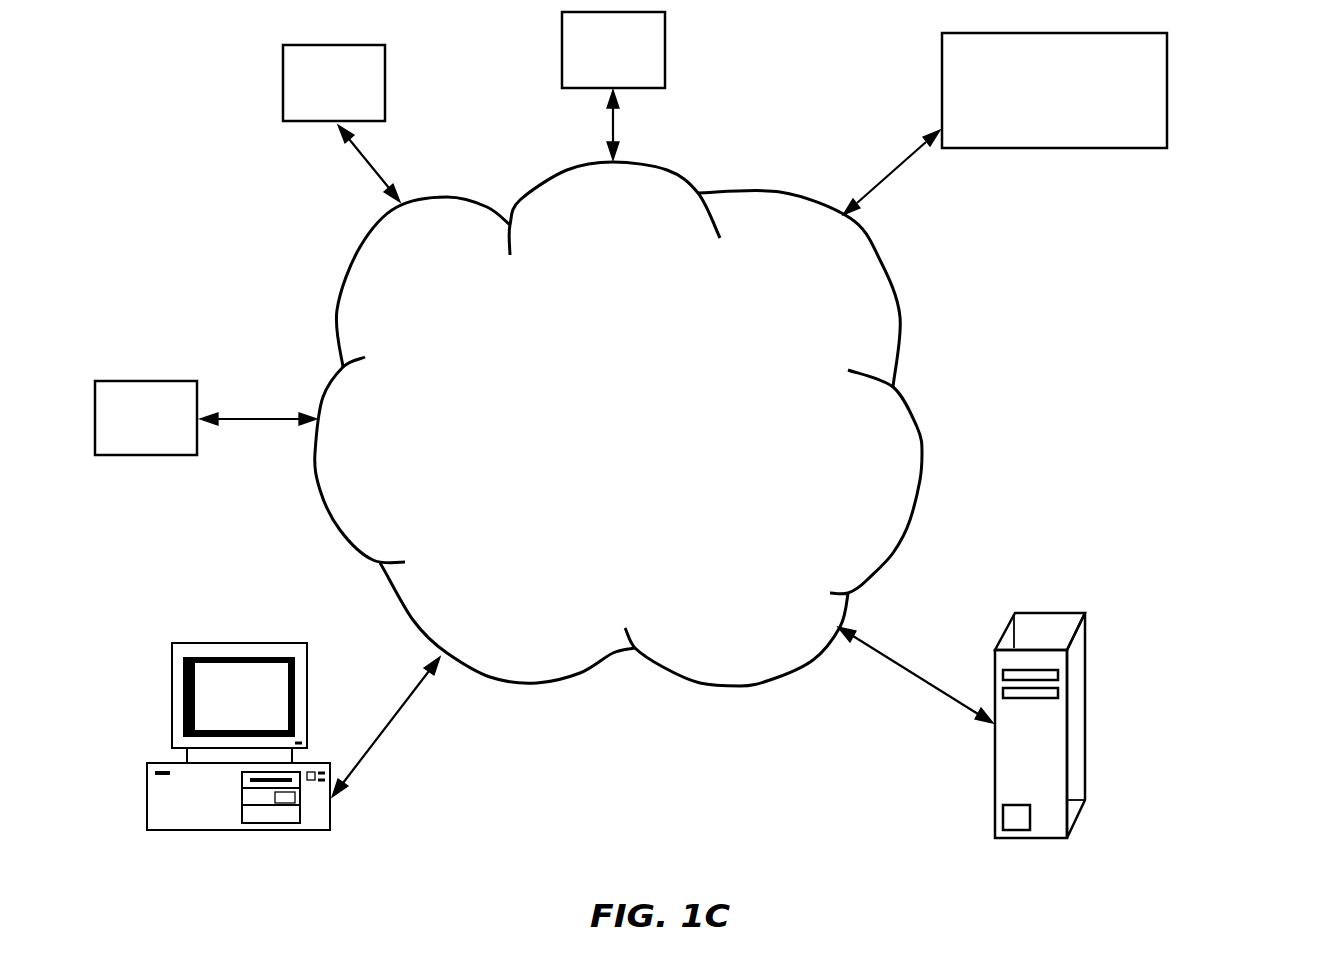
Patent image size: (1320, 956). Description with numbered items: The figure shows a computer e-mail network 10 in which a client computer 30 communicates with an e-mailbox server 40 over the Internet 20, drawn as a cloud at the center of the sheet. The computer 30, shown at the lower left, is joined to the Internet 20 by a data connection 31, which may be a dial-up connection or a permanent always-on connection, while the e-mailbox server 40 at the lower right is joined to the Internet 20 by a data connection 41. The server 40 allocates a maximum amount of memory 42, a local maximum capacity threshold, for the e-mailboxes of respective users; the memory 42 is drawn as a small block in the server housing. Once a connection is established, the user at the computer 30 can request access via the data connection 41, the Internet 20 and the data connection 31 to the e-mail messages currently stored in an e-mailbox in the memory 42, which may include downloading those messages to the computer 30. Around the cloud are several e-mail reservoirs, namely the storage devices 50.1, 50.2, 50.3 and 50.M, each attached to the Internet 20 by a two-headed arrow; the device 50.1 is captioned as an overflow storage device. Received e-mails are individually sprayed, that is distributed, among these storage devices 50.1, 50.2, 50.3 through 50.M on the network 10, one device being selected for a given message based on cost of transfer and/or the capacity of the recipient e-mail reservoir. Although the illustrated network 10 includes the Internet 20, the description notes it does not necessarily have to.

The computer e-mail network 10 is at (191, 242).
The Internet 20 is at (900, 322).
The client computer 30 is at (165, 830).
The data connection 31 is at (383, 730).
The e-mailbox server 40 is at (1062, 755).
The data connection 41 is at (917, 678).
The memory 42 is at (1032, 885).
The e-mail reservoir 50.1 is at (1034, 131).
The e-mail reservoir 50.2 is at (594, 60).
The e-mail reservoir 50.3 is at (314, 94).
The e-mail reservoir 50.M is at (168, 428).